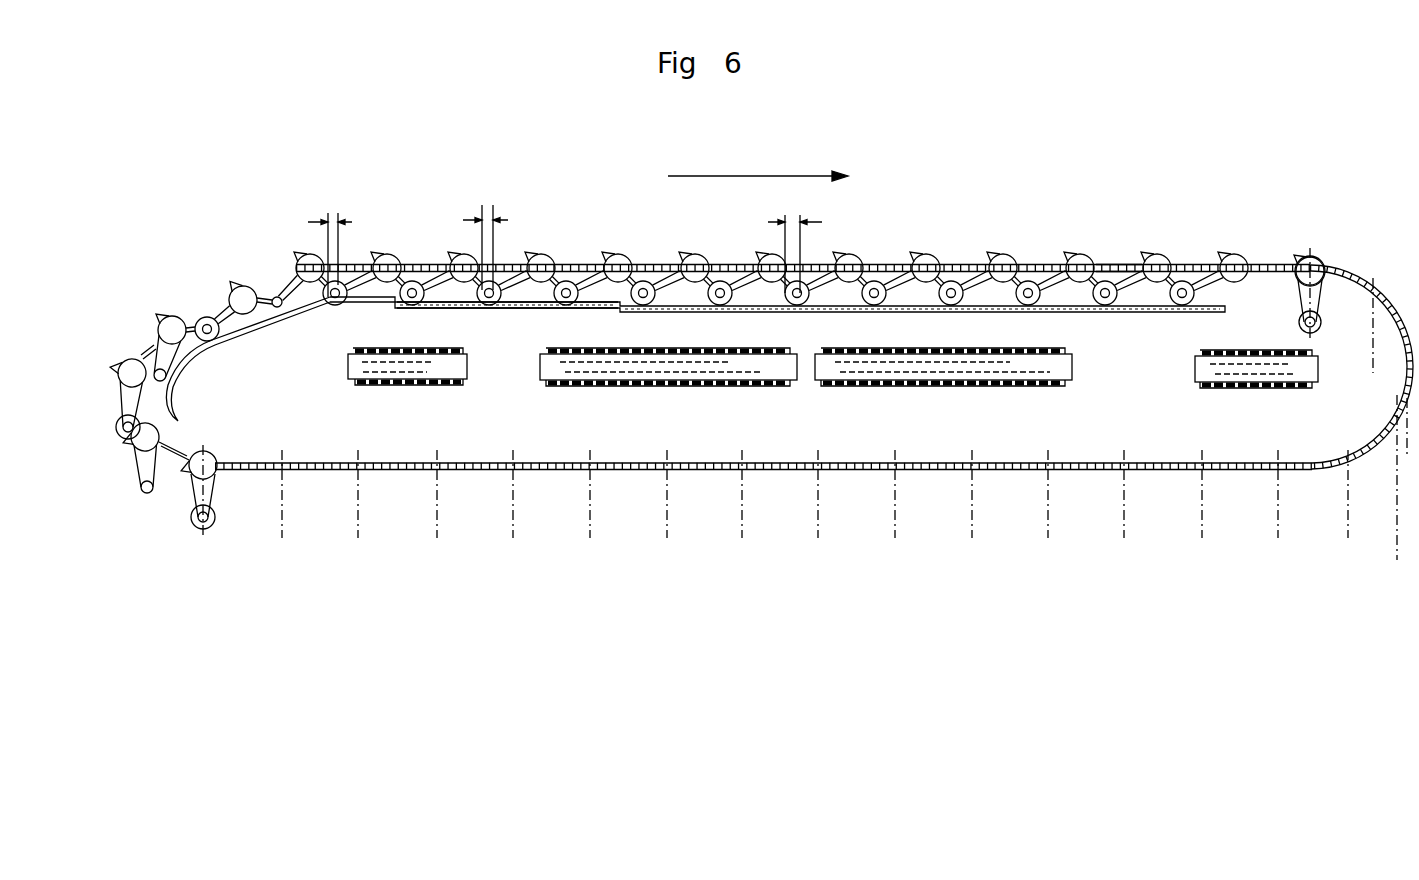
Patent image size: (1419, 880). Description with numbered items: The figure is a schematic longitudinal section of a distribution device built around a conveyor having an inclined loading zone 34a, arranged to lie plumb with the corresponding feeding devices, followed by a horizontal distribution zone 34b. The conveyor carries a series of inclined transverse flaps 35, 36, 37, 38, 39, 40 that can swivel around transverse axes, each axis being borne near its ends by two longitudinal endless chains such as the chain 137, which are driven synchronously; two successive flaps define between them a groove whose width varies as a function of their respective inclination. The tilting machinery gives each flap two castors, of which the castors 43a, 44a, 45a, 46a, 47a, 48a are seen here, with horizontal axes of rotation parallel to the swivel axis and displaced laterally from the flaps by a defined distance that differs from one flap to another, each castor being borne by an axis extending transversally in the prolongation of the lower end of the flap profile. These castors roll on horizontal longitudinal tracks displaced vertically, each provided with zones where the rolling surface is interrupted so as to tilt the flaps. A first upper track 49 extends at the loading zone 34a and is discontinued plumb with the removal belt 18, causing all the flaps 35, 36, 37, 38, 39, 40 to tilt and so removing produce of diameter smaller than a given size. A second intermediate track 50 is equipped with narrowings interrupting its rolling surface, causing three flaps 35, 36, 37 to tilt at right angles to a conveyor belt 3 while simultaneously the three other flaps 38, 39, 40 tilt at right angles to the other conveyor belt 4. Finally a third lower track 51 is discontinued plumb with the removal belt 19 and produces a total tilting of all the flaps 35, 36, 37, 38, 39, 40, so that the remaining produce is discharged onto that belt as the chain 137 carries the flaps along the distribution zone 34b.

The inclined loading zone 34a is at (197, 314).
The horizontal distribution zone 34b is at (1110, 260).
The first upper track 49 is at (271, 306).
The second intermediate track 50 is at (525, 304).
The castor 43a is at (636, 275).
The castor 44a is at (697, 272).
The castor 45a is at (815, 272).
The castor 46a is at (883, 262).
The castor 47a is at (954, 278).
The castor 48a is at (1030, 272).
The inclined transverse flap 35 is at (643, 248).
The inclined transverse flap 36 is at (713, 248).
The inclined transverse flap 37 is at (874, 245).
The inclined transverse flap 38 is at (951, 243).
The inclined transverse flap 39 is at (1025, 243).
The inclined transverse flap 40 is at (1060, 278).
The third lower track 51 is at (1168, 292).
The removal belt 18 is at (406, 384).
The conveyor belt 3 is at (640, 373).
The conveyor belt 4 is at (932, 375).
The removal belt 19 is at (1246, 381).
The longitudinal endless chain 137 is at (692, 469).